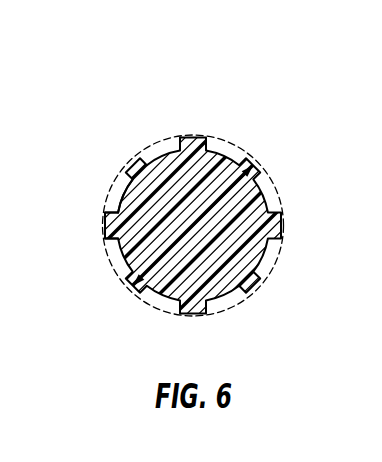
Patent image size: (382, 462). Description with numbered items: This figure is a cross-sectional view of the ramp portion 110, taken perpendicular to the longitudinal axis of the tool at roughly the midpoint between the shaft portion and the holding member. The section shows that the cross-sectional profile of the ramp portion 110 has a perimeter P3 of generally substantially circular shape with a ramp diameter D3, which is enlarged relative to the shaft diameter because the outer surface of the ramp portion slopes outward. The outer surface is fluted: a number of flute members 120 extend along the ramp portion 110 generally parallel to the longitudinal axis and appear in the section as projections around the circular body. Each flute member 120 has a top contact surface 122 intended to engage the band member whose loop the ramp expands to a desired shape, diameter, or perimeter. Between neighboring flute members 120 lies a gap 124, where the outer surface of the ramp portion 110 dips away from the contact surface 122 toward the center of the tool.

The ramp portion 110 is at (191, 184).
The flute member 120 is at (107, 213).
The top contact surface 122 is at (104, 227).
The gap 124 is at (123, 189).
The perimeter P3 is at (225, 142).
The ramp diameter D3 is at (208, 208).